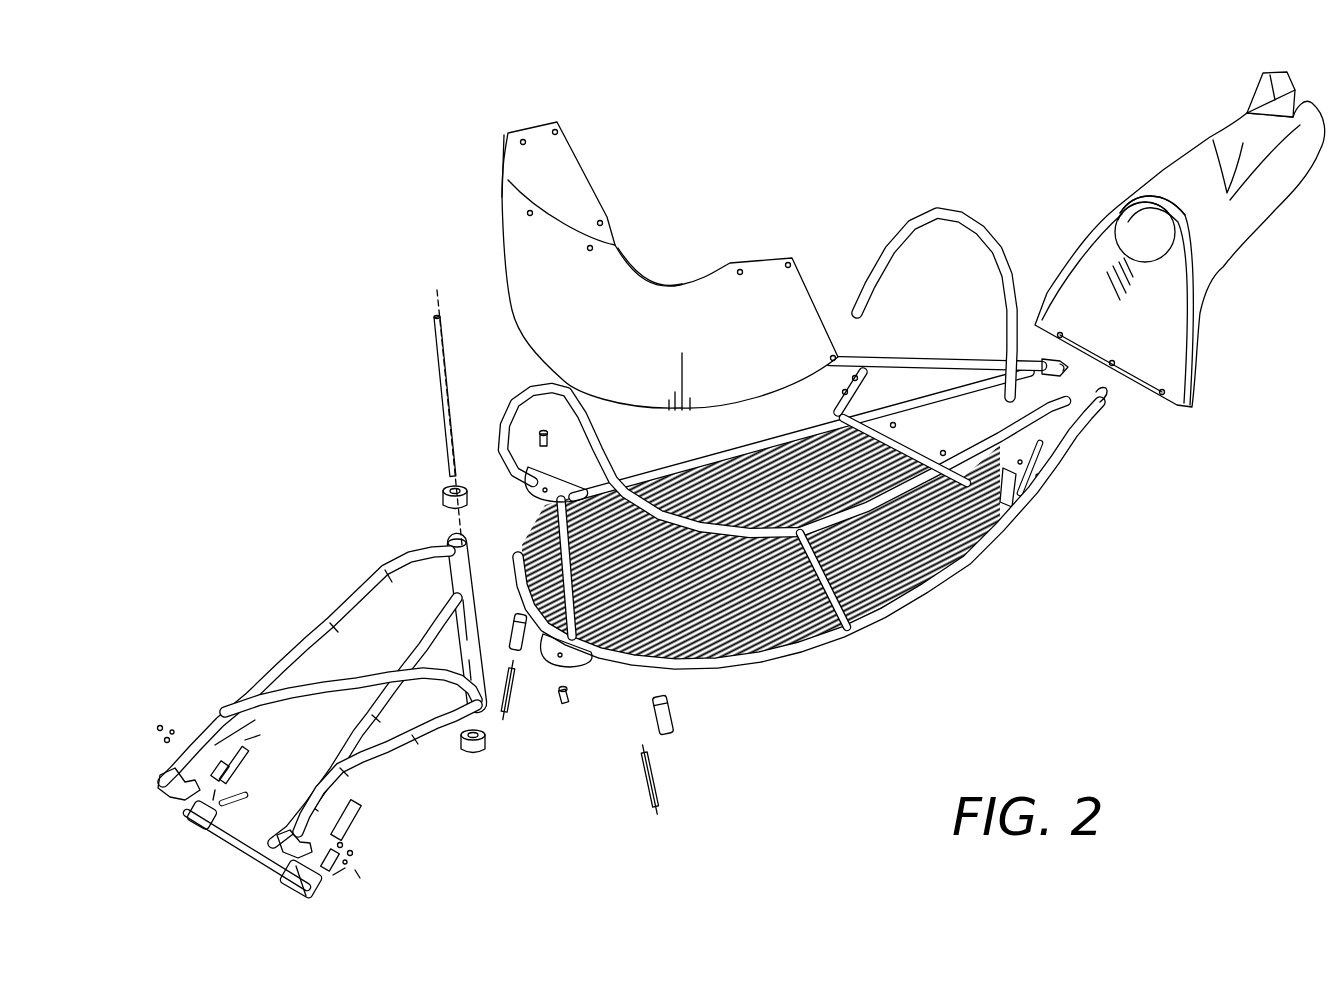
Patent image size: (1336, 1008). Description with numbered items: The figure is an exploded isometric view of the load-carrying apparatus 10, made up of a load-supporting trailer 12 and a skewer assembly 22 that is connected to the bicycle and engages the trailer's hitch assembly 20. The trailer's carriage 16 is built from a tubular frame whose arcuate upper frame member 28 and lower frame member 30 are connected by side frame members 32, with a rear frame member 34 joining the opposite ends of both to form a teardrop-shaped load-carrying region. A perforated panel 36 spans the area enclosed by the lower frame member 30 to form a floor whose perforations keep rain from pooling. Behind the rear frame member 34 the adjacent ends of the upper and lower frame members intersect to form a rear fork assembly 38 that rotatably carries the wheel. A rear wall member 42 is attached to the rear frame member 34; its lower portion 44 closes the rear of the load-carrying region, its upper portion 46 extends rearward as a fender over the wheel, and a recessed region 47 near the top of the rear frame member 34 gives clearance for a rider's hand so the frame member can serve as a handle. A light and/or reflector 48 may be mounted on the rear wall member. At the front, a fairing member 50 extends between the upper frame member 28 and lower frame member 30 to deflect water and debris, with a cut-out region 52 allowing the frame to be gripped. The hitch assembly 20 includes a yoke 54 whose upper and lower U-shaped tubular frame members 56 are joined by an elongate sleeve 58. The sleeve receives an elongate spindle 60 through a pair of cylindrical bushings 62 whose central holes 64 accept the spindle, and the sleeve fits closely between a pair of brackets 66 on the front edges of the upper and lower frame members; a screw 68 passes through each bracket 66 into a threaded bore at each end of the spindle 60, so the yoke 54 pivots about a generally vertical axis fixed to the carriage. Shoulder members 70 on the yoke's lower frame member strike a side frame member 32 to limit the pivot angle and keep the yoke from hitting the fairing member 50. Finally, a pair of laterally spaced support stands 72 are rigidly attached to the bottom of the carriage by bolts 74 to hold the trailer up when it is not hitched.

The apparatus 10 is at (1076, 124).
The load-supporting trailer 12 is at (1012, 105).
The carriage 16 is at (975, 680).
The hitch assembly 20 is at (412, 857).
The skewer assembly 22 is at (183, 862).
The upper frame member 28 is at (527, 392).
The lower frame member 30 is at (905, 603).
The side frame member 32 is at (535, 558).
The rear frame member 34 is at (905, 230).
The perforated panel 36 is at (745, 675).
The rear fork assembly 38 is at (1145, 466).
The rear wall member 42 is at (1210, 223).
The lower portion 44 is at (1157, 358).
The upper portion 46 is at (1280, 152).
The recessed region 47 is at (1140, 235).
The light and/or reflector 48 is at (1268, 92).
The fairing member 50 is at (518, 263).
The cut-out region 52 is at (655, 285).
The yoke 54 is at (257, 648).
The U-shaped tubular frame members 56 is at (318, 617).
The elongate sleeve 58 is at (450, 541).
The elongate spindle 60 is at (437, 395).
The cylindrical bushings 62 is at (446, 503).
The central holes 64 is at (448, 488).
The brackets 66 is at (531, 477).
The screw 68 is at (540, 432).
The shoulder members 70 is at (440, 665).
The support stands 72 is at (514, 628).
The bolts 74 is at (510, 700).